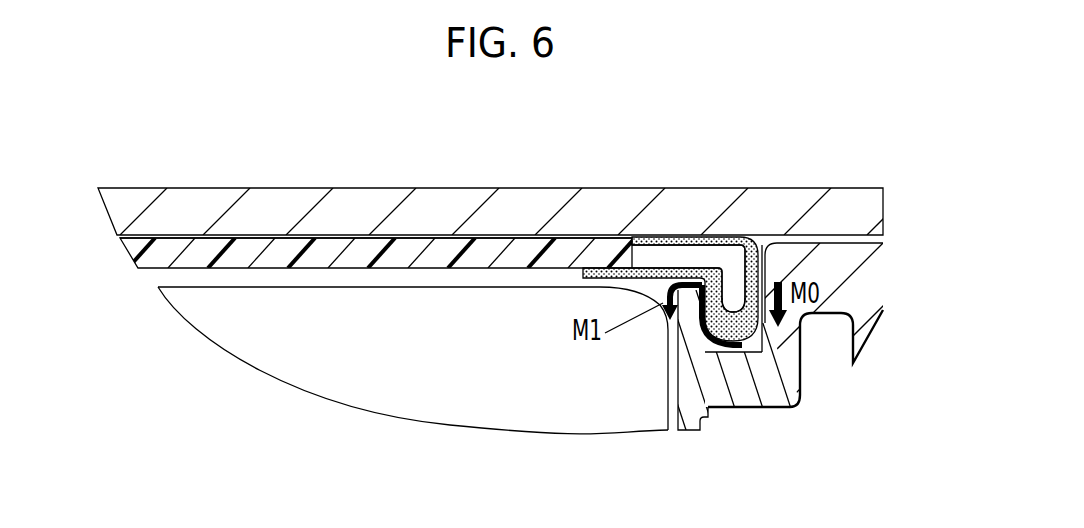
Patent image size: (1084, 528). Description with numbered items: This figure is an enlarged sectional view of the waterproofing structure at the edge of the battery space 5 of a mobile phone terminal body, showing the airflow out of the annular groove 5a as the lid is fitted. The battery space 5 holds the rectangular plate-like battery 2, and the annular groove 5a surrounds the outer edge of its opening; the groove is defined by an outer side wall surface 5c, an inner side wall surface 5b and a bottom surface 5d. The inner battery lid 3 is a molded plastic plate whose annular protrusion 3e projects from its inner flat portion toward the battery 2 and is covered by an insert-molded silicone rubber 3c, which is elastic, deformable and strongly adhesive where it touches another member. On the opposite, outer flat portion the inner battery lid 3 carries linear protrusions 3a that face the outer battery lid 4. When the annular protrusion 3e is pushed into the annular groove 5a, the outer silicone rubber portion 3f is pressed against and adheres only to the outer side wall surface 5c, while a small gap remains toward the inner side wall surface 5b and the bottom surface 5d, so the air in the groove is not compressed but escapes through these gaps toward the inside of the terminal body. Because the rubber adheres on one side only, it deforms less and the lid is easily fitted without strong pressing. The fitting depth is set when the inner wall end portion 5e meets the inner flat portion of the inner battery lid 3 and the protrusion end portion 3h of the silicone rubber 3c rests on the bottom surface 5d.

The battery 2 is at (403, 385).
The inner battery lid 3 is at (362, 250).
The linear protrusions 3a is at (297, 240).
The silicone rubber 3c is at (701, 250).
The annular protrusion 3e is at (744, 273).
The outer silicone rubber portion 3f is at (765, 325).
The protrusion end portion 3h is at (797, 408).
The outer battery lid 4 is at (449, 206).
The battery space 5 is at (157, 278).
The annular groove 5a is at (742, 362).
The inner side wall surface 5b is at (703, 337).
The outer side wall surface 5c is at (770, 233).
The bottom surface 5d is at (681, 350).
The inner wall end portion 5e is at (700, 268).